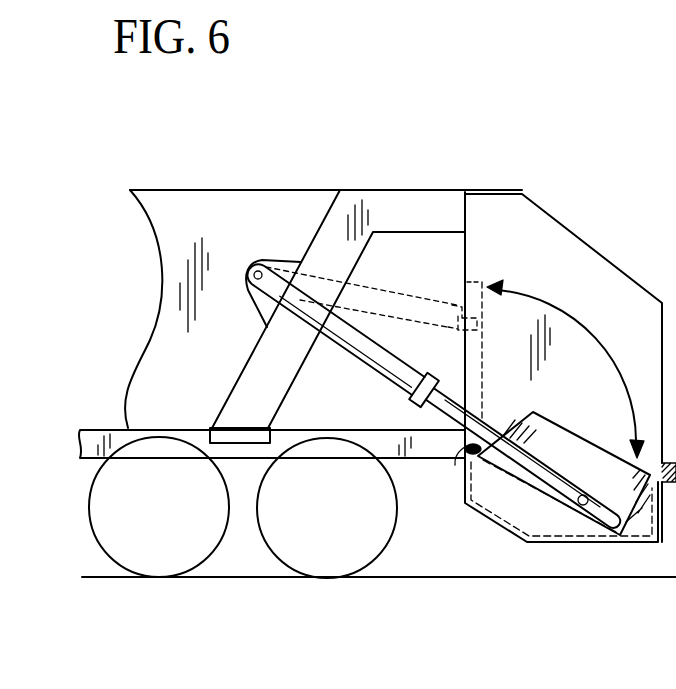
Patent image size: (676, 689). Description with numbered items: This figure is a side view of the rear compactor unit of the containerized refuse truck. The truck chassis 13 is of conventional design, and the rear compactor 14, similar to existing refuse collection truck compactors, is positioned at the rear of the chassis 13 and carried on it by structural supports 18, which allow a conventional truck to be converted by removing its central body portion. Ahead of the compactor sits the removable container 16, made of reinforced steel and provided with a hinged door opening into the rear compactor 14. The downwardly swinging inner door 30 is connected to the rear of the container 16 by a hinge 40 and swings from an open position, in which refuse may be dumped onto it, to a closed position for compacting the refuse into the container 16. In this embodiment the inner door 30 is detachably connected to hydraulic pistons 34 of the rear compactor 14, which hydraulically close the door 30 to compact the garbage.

The chassis 13 is at (110, 428).
The rear compactor 14 is at (560, 222).
The removable container 16 is at (190, 190).
The structural supports 18 is at (325, 218).
The inner door 30 is at (606, 493).
The hydraulic pistons 34 is at (339, 344).
The hinge 40 is at (468, 452).